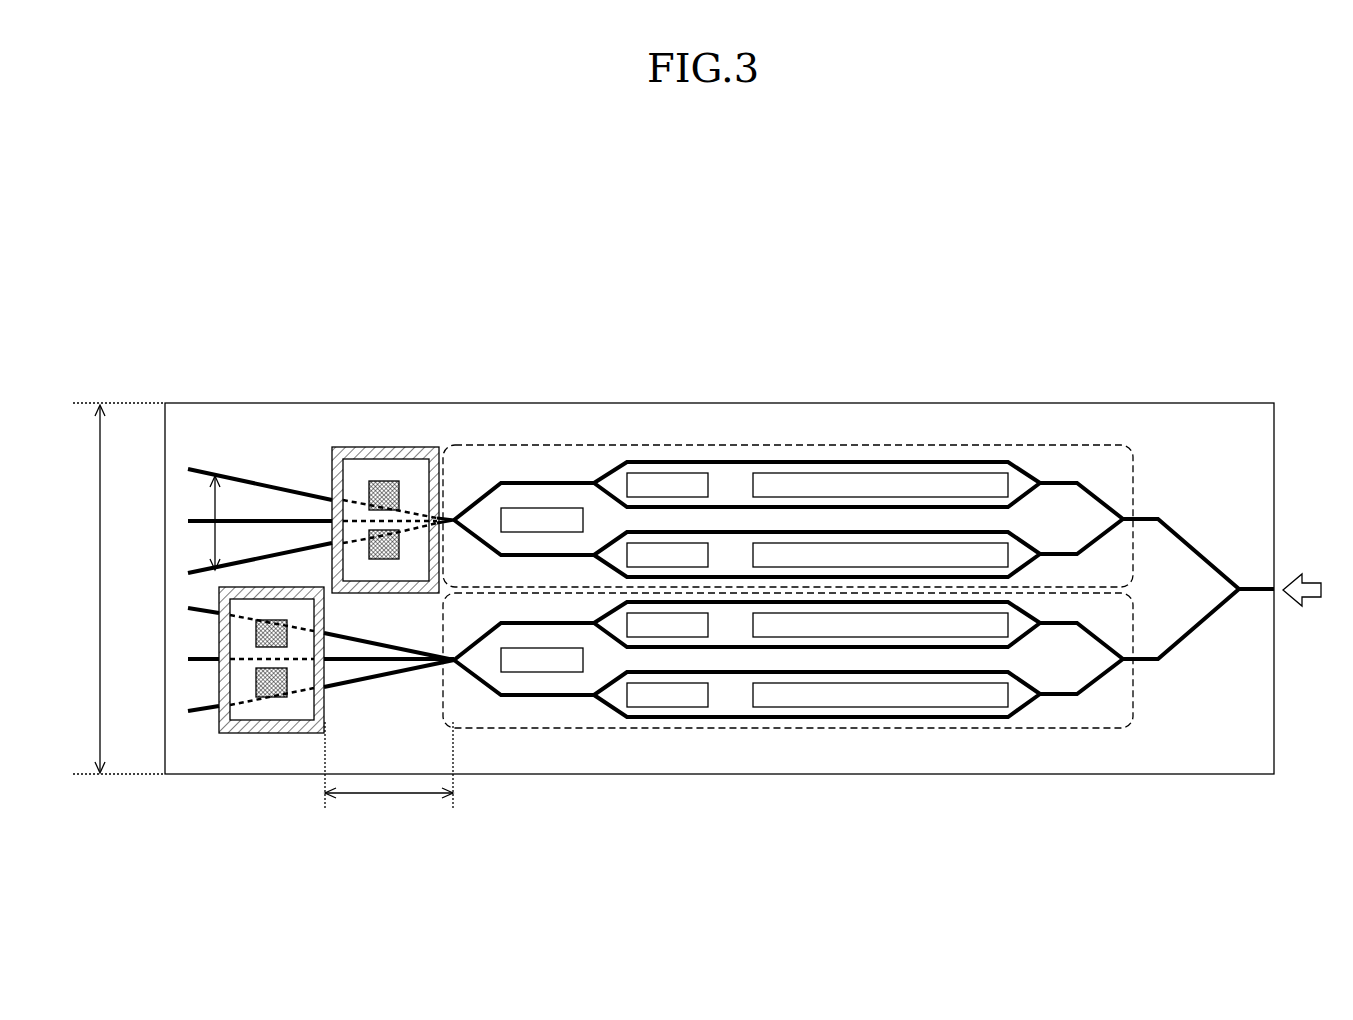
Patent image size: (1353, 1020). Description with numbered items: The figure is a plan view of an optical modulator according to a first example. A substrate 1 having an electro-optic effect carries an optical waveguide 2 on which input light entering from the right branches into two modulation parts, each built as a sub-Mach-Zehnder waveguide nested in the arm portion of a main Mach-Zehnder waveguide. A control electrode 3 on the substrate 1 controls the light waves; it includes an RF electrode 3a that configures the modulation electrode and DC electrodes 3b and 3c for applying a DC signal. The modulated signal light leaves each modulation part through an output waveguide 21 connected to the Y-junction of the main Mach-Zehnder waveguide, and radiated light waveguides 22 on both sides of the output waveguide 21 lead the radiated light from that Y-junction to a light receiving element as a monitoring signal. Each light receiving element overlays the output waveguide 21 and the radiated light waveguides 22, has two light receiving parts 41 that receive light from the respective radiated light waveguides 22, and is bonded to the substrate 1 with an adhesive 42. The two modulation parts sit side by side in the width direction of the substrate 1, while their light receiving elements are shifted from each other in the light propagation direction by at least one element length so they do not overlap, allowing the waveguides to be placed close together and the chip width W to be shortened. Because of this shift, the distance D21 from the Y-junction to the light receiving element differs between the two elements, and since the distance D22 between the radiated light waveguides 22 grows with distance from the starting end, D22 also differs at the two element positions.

The substrate 1 is at (1243, 417).
The optical waveguide 2 is at (1228, 554).
The control electrode 3 is at (788, 500).
The RF electrode 3a is at (880, 530).
The DC electrode 3b is at (668, 473).
The DC electrode 3c is at (546, 507).
The light receiving part 41 is at (388, 470).
The adhesive 42 is at (347, 448).
The output waveguide 21 is at (200, 519).
The radiated light waveguide 22 is at (245, 481).
The distance D21 is at (389, 775).
The distance D22 is at (212, 478).
The chip width W is at (119, 588).